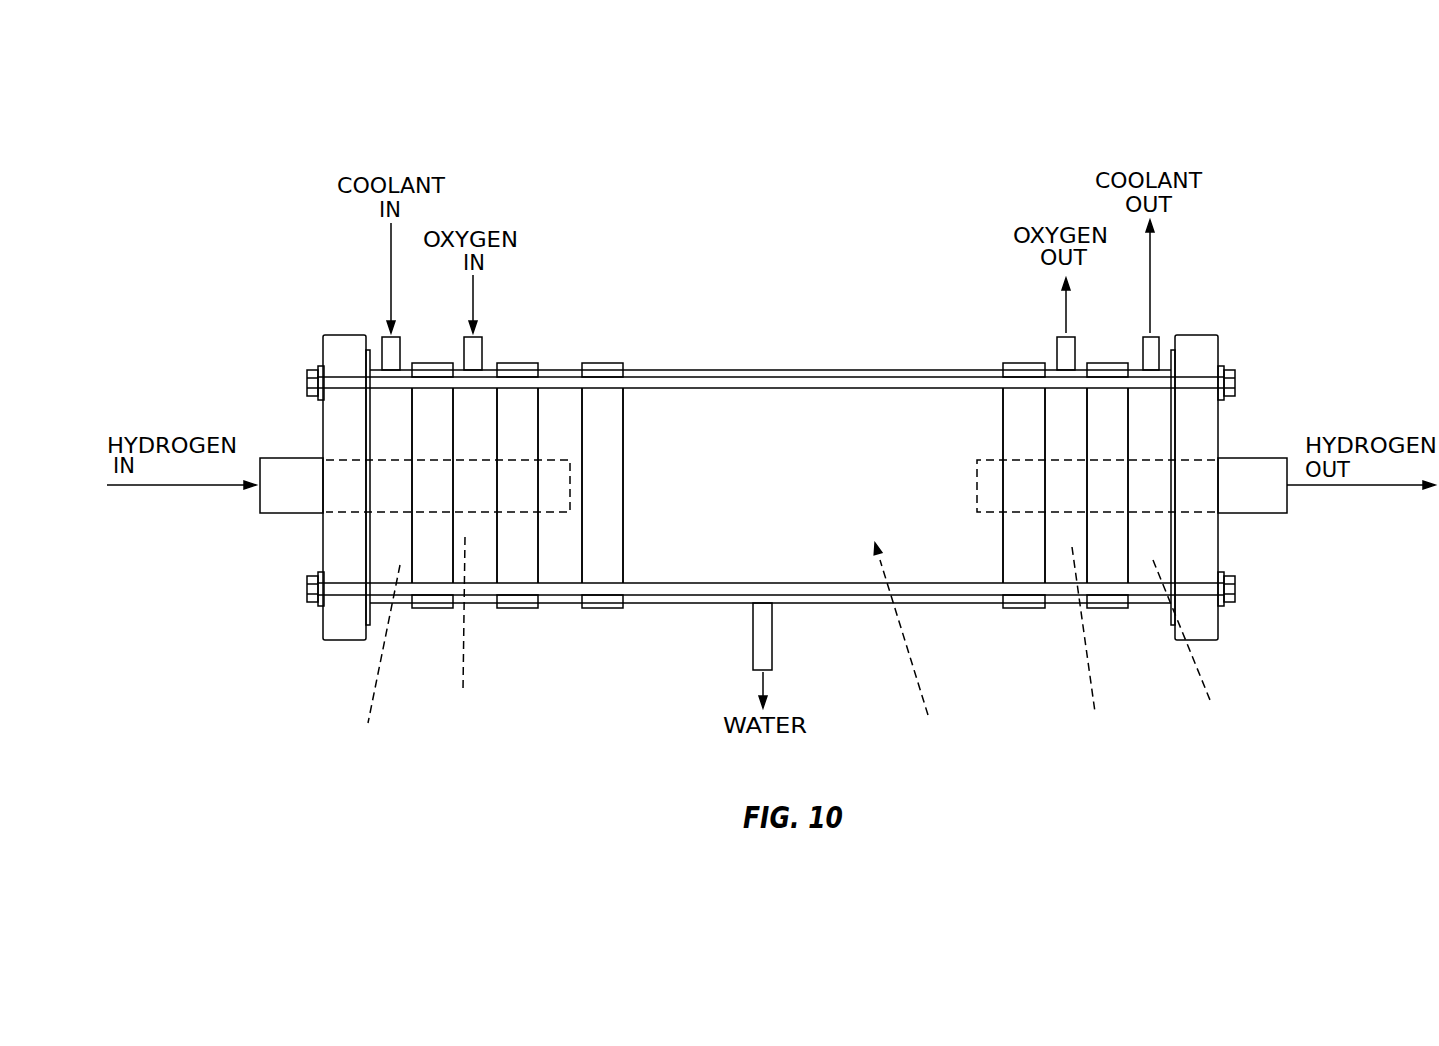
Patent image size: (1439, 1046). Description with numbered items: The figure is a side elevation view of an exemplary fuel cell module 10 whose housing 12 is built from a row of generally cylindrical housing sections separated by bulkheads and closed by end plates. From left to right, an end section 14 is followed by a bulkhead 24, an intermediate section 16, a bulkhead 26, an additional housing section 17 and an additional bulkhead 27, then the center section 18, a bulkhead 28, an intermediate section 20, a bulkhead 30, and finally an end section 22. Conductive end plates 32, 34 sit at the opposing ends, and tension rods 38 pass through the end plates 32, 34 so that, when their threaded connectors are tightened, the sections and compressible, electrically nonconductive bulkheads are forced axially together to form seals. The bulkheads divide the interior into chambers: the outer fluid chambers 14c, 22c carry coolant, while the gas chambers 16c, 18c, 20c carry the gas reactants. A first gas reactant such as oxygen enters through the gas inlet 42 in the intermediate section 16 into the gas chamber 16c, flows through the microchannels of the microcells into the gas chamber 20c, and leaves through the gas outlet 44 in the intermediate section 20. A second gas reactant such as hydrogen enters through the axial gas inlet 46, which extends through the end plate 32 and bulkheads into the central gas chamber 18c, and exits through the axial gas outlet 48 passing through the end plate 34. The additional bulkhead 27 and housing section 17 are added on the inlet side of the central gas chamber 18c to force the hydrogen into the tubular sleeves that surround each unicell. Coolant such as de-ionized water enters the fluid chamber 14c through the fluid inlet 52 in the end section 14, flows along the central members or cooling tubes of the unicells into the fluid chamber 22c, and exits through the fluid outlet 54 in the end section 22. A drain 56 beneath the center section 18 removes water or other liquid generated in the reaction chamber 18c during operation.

The fuel cell module 10 is at (889, 176).
The housing 12 is at (716, 622).
The end section 14 is at (387, 553).
The fluid chamber 14c is at (376, 657).
The intermediate section 16 is at (473, 563).
The gas chamber 16c is at (468, 627).
The housing section 17 is at (555, 365).
The center section 18 is at (703, 420).
The central gas chamber 18c is at (912, 643).
The intermediate section 20 is at (1062, 560).
The gas chamber 20c is at (1094, 642).
The end section 22 is at (1142, 563).
The fluid chamber 22c is at (1192, 643).
The bulkhead 24 is at (438, 553).
The bulkhead 26 is at (518, 563).
The additional bulkhead 27 is at (600, 608).
The bulkhead 28 is at (1022, 565).
The bulkhead 30 is at (1102, 565).
The end plate 32 is at (340, 622).
The end plate 34 is at (1202, 558).
The tension rods 38 is at (855, 383).
The gas inlet 42 is at (485, 350).
The gas outlet 44 is at (1055, 348).
The gas inlet 46 is at (295, 482).
The gas outlet 48 is at (1255, 473).
The fluid inlet 52 is at (380, 350).
The fluid outlet 54 is at (1160, 348).
The drain 56 is at (772, 660).